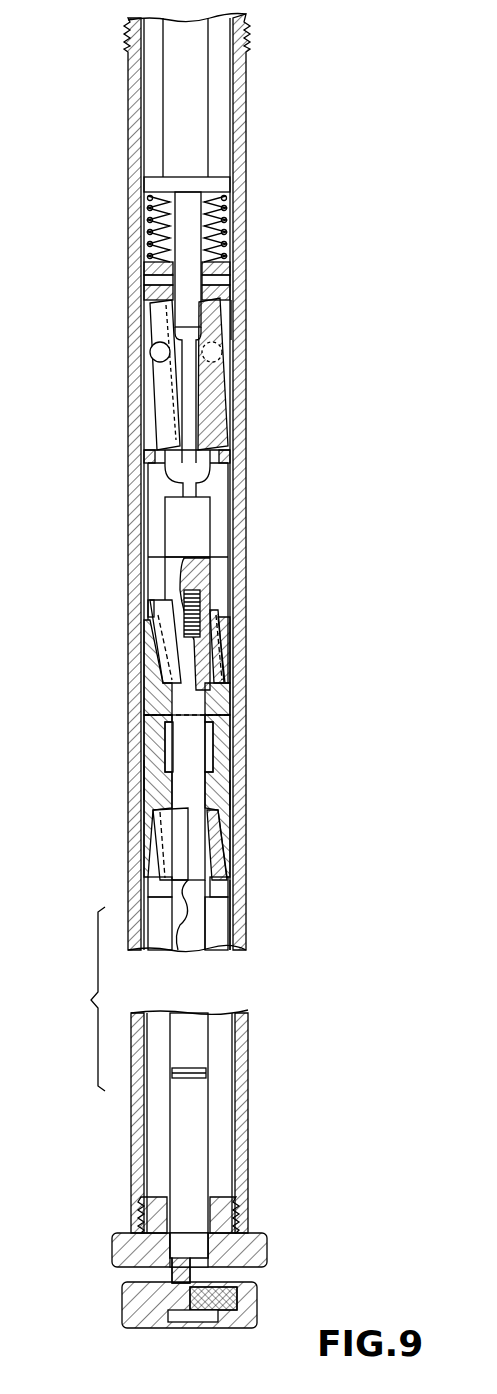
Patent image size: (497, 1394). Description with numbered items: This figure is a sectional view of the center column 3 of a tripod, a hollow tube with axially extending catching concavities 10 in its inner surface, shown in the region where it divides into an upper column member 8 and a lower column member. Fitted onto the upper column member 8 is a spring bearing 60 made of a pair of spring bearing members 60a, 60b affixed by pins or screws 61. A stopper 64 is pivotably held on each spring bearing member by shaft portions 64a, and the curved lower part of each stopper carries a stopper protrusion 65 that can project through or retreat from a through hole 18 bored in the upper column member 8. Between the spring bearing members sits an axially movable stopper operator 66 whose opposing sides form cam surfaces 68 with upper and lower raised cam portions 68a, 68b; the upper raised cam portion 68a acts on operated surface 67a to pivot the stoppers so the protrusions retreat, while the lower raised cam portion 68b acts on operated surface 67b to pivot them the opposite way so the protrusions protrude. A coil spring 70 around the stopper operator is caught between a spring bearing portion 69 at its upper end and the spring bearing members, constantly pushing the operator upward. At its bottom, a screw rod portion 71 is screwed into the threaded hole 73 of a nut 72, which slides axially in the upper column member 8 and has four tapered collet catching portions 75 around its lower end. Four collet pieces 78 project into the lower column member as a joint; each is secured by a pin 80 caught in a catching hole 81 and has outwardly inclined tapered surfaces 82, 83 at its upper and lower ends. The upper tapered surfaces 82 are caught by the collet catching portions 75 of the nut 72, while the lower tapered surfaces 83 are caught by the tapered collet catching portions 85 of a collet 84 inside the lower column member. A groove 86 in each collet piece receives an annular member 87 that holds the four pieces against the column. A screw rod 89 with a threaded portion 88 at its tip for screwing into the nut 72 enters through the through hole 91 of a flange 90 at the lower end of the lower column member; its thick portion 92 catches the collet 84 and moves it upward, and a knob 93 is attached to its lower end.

The center column 3 is at (244, 90).
The upper column member 8 is at (245, 310).
The catching concavities 10 is at (173, 118).
The through holes 18 is at (140, 448).
The spring bearing 60 is at (225, 268).
The spring bearing member 60a is at (228, 296).
The spring bearing member 60b is at (152, 288).
The pins or screws 61 is at (228, 280).
The stopper 64 is at (160, 408).
The shaft portions 64a is at (150, 365).
The stopper protrusions 65 is at (150, 462).
The stopper operator 66 is at (193, 207).
The operated surface 67a is at (200, 326).
The operated surface 67b is at (160, 482).
The cam surfaces 68 is at (150, 211).
The raised cam portion 68a is at (150, 241).
The raised cam portion 68b is at (170, 510).
The spring bearing portion 69 is at (213, 187).
The coil spring 70 is at (140, 204).
The screw rod portion 71 is at (195, 577).
The nut 72 is at (225, 570).
The threaded hole 73 is at (205, 607).
The collet catching portions 75 is at (170, 668).
The collet pieces 78 is at (150, 700).
The pin 80 is at (141, 755).
The catching hole 81 is at (166, 742).
The tapered surface 82 is at (160, 641).
The tapered surface 83 is at (165, 820).
The collet 84 is at (195, 870).
The collet catching portions 85 is at (158, 848).
The groove 86 is at (150, 772).
The annular member 87 is at (215, 735).
The threaded portion 88 is at (245, 690).
The screw rod 89 is at (227, 880).
The flange 90 is at (263, 1245).
The through hole 91 is at (225, 1212).
The thick portion 92 is at (200, 1155).
The knob 93 is at (140, 1318).